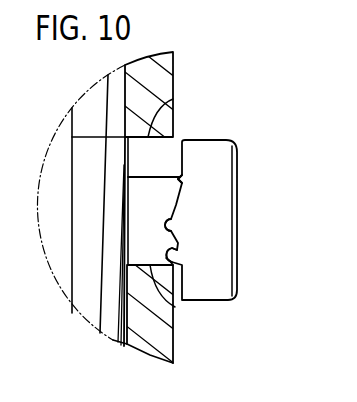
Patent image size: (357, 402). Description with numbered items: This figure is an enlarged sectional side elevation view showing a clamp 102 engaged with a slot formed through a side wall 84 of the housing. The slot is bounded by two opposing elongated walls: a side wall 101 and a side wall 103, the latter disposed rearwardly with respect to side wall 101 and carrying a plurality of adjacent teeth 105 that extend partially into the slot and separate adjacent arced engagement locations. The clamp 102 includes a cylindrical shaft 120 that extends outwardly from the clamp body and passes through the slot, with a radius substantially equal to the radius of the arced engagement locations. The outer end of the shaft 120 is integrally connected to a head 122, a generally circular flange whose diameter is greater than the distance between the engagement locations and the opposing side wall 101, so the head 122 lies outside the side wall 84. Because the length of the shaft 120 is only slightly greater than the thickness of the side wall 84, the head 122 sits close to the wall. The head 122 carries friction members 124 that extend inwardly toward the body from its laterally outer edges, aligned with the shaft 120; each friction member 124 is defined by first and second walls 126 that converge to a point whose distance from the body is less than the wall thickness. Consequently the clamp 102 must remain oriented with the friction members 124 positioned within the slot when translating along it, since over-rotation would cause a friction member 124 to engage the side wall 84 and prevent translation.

The side wall 84 is at (173, 72).
The side wall 101 is at (173, 99).
The clamp 102 is at (72, 262).
The side wall 103 is at (175, 307).
The tooth 105 is at (174, 261).
The shaft 120 is at (143, 177).
The head 122 is at (202, 139).
The friction member 124 is at (172, 221).
The first and second walls 126 is at (183, 208).